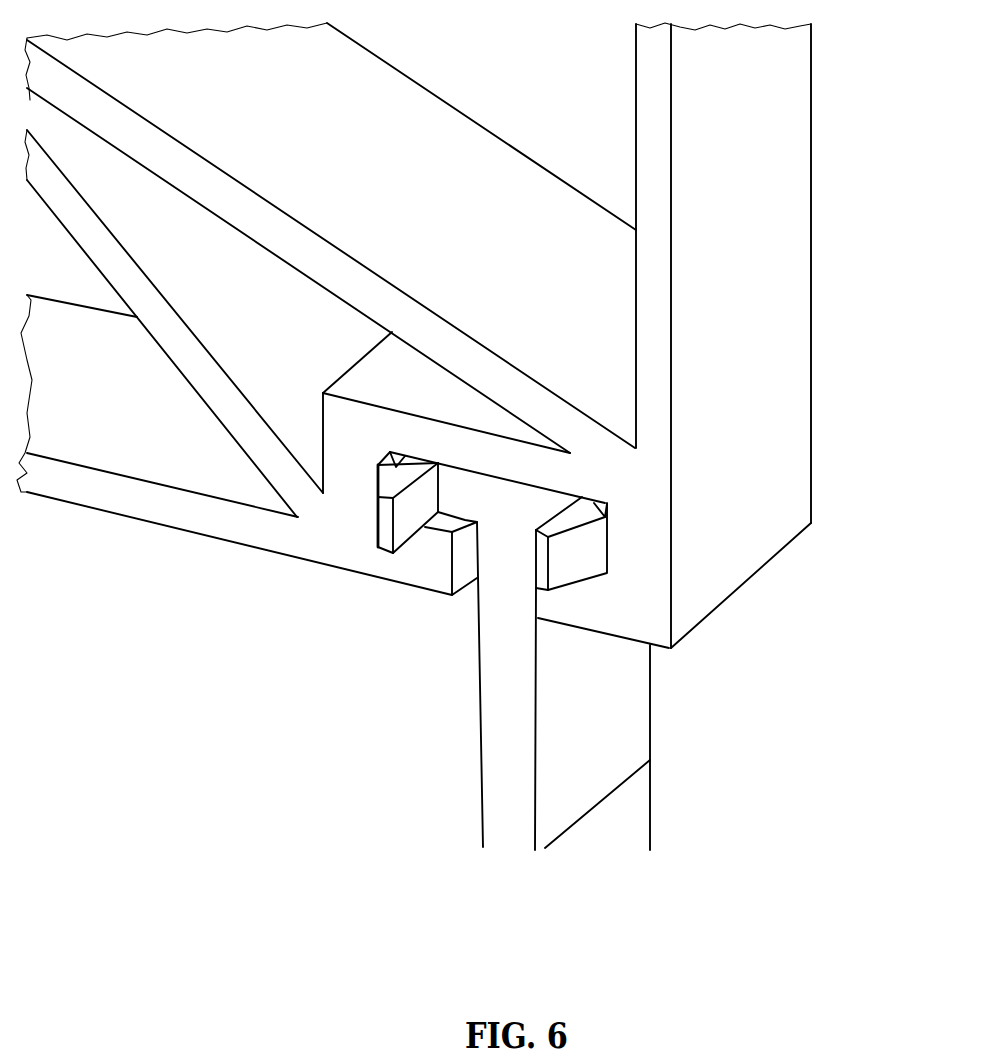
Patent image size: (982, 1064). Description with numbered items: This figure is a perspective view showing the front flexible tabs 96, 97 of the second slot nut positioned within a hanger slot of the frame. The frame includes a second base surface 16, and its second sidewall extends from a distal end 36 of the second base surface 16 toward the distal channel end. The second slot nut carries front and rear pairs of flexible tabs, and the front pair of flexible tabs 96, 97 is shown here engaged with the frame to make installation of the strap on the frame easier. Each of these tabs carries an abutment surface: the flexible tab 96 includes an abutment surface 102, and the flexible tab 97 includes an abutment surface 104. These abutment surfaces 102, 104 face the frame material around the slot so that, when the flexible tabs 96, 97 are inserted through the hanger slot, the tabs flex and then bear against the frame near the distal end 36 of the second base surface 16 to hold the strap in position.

The second base surface 16 is at (220, 520).
The distal end 36 is at (717, 583).
The flexible tab 96 is at (398, 540).
The flexible tab 97 is at (582, 560).
The abutment surface 102 is at (388, 450).
The abutment surface 104 is at (605, 510).